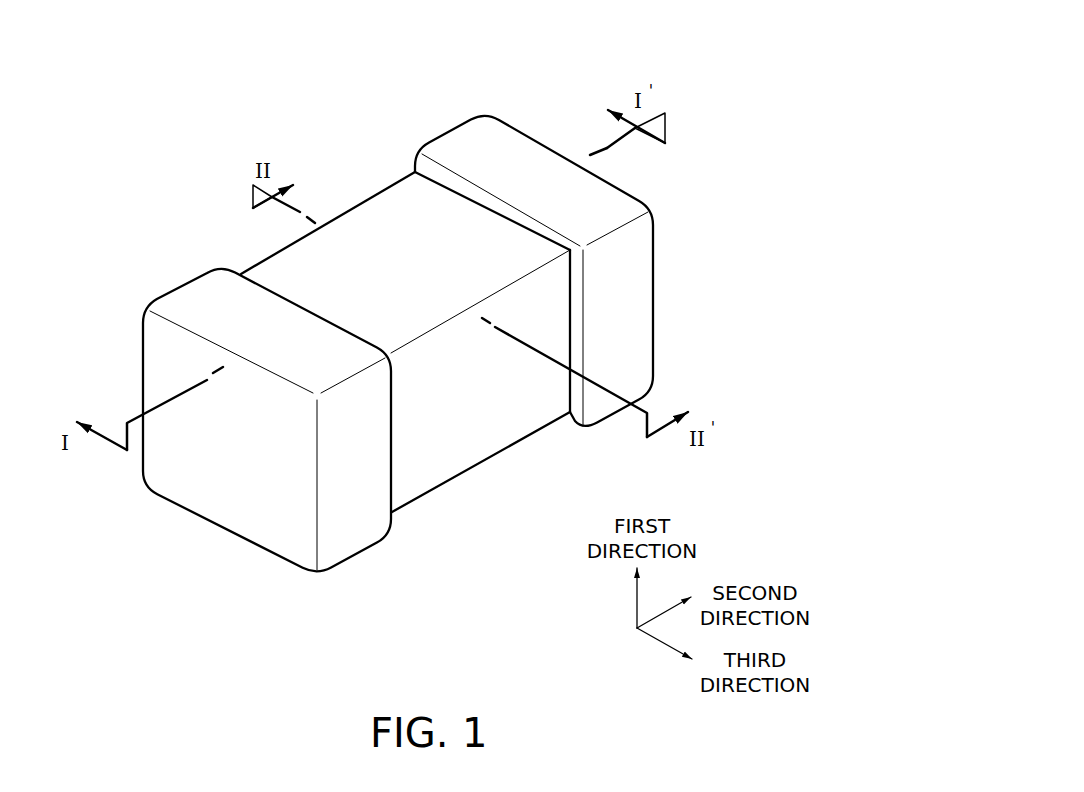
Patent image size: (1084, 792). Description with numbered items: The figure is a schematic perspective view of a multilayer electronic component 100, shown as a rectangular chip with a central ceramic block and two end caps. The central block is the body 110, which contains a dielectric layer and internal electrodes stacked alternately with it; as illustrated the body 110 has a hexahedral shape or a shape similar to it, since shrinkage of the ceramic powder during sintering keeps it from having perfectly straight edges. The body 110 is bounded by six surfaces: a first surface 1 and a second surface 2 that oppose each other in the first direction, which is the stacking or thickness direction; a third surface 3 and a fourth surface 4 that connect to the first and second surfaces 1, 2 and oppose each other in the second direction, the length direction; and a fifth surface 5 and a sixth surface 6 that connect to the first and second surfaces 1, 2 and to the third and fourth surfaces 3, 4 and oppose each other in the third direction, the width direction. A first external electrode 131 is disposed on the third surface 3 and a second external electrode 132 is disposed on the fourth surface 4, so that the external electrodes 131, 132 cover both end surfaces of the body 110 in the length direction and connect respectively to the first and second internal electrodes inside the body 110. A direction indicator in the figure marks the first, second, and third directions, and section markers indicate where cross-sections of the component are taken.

The multilayer electronic component 100 is at (150, 82).
The body 110 is at (388, 325).
The first external electrode 131 is at (267, 393).
The second external electrode 132 is at (567, 246).
The first surface 1 is at (442, 433).
The second surface 2 is at (417, 227).
The third surface 3 is at (237, 480).
The fourth surface 4 is at (606, 287).
The fifth surface 5 is at (363, 252).
The sixth surface 6 is at (498, 405).